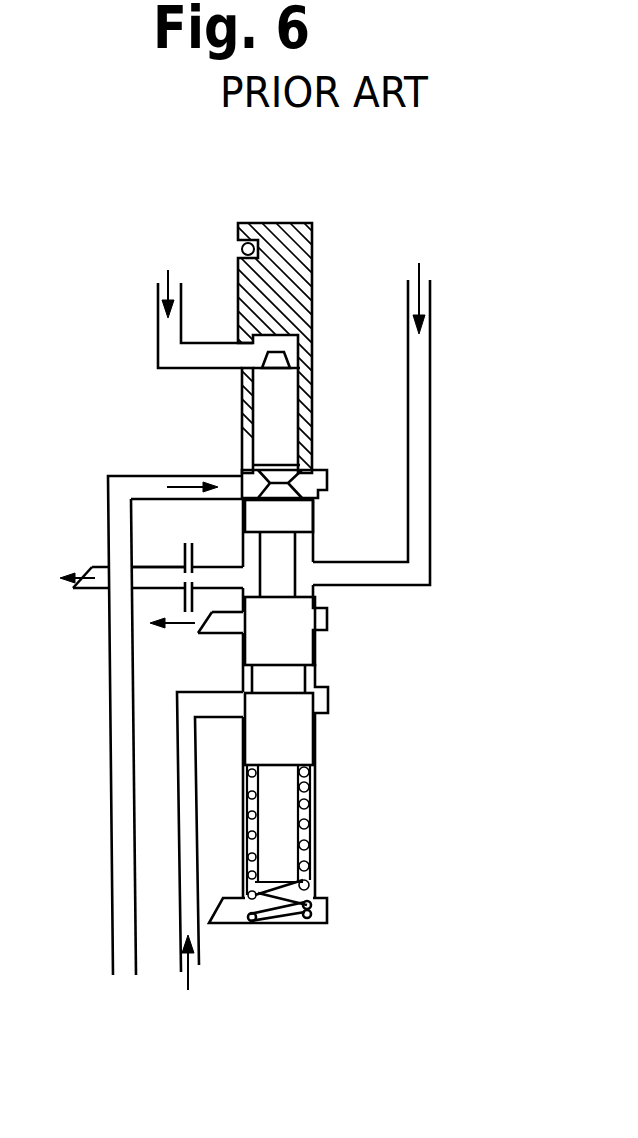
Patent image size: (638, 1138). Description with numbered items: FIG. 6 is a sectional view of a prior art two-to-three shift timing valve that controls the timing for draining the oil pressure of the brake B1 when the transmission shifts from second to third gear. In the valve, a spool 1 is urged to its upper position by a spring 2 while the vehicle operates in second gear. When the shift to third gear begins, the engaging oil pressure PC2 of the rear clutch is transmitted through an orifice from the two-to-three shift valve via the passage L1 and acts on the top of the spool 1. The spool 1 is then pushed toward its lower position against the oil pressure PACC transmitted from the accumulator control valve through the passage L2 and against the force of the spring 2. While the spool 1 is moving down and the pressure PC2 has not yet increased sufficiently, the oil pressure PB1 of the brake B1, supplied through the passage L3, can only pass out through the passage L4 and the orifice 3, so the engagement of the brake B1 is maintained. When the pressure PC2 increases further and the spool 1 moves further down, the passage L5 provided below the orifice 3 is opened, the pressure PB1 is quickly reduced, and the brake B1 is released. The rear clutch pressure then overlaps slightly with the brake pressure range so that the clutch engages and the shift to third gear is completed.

The spool 1 is at (300, 553).
The spring 2 is at (313, 825).
The orifice 3 is at (180, 575).
The passage L1 is at (132, 476).
The passage L2 is at (198, 766).
The passage L3 is at (432, 402).
The passage L4 is at (92, 590).
The passage L5 is at (212, 633).
The oil pressure of brake B1 PB1 is at (418, 263).
The engaging oil pressure of rear clutch C2 PC2 is at (187, 483).
The oil pressure from accumulator control valve PACC is at (197, 967).